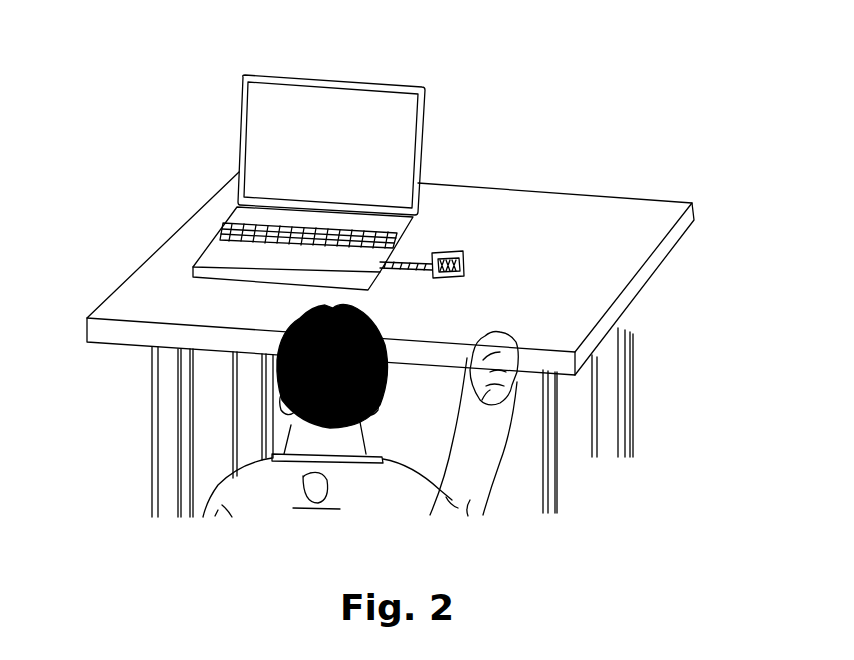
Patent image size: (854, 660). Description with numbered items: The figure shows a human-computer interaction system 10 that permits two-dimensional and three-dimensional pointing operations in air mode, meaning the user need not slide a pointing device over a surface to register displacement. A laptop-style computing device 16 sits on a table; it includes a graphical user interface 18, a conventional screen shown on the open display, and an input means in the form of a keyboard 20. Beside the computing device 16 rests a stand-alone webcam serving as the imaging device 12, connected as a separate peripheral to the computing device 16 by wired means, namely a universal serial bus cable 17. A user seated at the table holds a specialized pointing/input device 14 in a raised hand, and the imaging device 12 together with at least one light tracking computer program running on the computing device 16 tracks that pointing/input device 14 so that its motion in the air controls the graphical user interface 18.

The human-computer interaction system 10 is at (512, 94).
The imaging device 12 is at (463, 262).
The pointing/input device 14 is at (512, 335).
The computing device 16 is at (281, 145).
The USB cable 17 is at (412, 270).
The graphical user interface 18 is at (336, 150).
The keyboard 20 is at (237, 220).